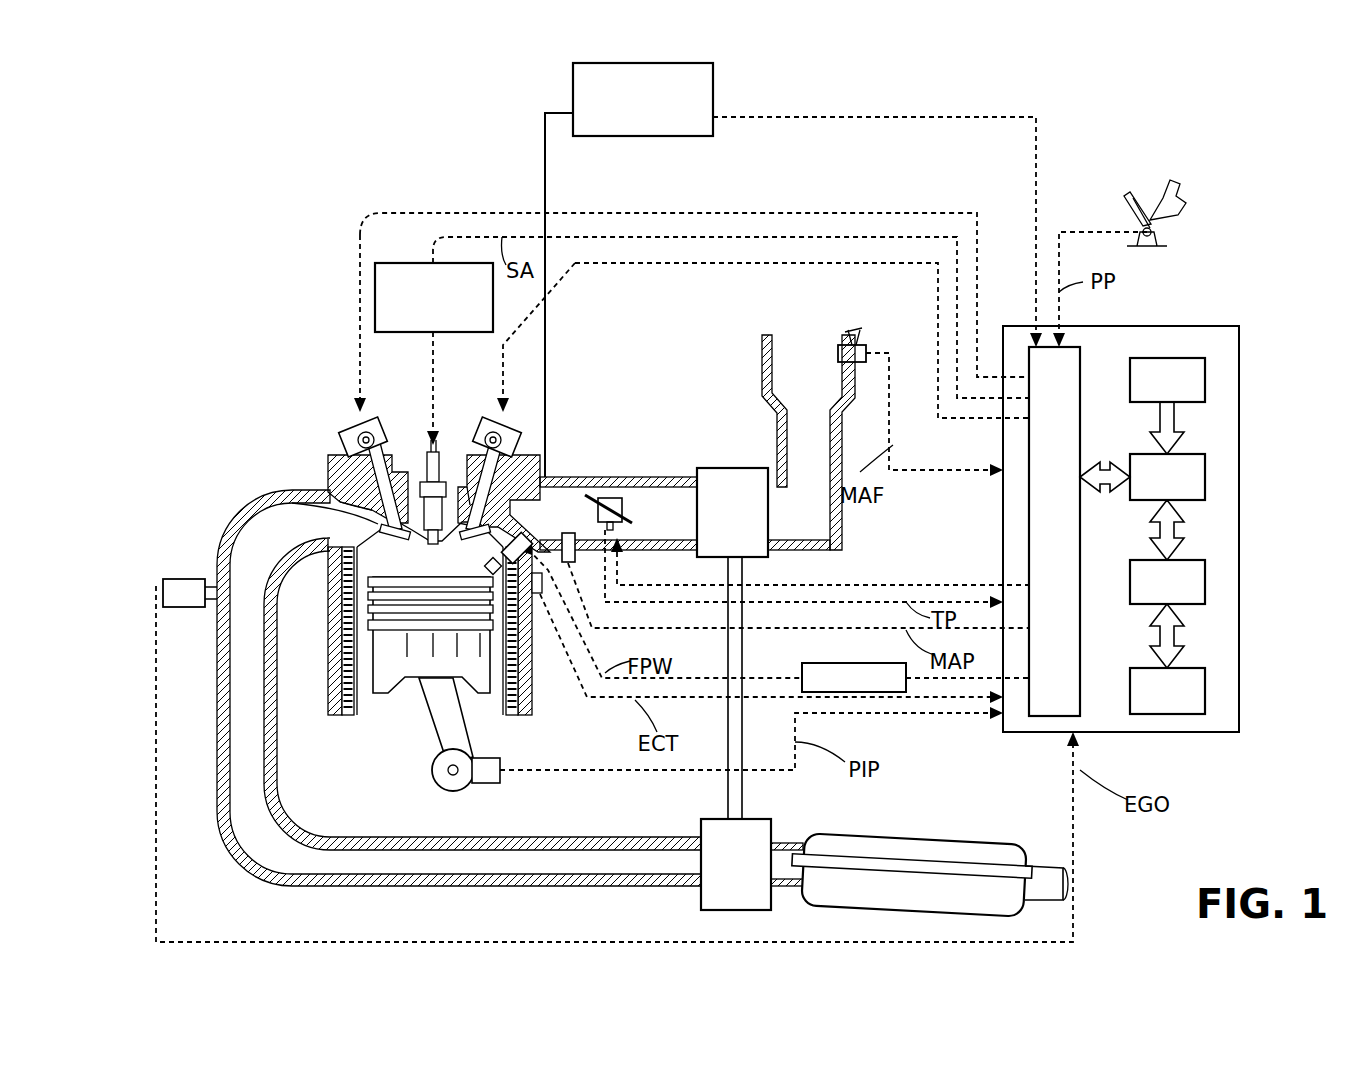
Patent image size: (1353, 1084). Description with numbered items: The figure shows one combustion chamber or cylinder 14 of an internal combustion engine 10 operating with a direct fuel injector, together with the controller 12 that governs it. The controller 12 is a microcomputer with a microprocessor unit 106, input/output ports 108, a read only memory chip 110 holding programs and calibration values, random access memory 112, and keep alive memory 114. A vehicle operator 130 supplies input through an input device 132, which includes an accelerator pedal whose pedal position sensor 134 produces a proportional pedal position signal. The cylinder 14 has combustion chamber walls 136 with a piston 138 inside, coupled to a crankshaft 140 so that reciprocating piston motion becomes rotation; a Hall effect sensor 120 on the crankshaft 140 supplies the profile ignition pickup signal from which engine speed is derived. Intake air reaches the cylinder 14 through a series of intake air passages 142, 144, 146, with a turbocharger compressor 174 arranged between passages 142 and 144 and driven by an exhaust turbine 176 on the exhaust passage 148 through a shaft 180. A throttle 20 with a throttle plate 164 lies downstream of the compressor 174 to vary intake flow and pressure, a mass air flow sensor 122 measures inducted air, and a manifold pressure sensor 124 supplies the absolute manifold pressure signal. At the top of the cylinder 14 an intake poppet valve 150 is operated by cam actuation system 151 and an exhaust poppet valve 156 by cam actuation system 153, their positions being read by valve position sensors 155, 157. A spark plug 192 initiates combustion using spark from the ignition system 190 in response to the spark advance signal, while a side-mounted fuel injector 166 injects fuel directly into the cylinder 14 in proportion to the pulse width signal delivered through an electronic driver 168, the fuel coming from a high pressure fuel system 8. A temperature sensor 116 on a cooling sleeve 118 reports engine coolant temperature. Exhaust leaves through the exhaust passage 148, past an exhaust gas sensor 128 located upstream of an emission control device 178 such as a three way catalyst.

The internal combustion engine 10 is at (147, 143).
The high pressure fuel system 8 is at (713, 80).
The ignition system 190 is at (392, 262).
The input device 132 is at (1126, 206).
The vehicle operator 130 is at (1183, 196).
The pedal position sensor 134 is at (1165, 235).
The controller 12 is at (1240, 328).
The input/output ports 108 is at (1085, 352).
The read only memory chip 110 is at (1206, 380).
The microprocessor unit 106 is at (1206, 474).
The random access memory 112 is at (1206, 582).
The keep alive memory 114 is at (1206, 692).
The mass air flow sensor 122 is at (856, 345).
The intake air passage 142 is at (790, 385).
The compressor 174 is at (733, 468).
The throttle plate 164 is at (585, 498).
The throttle 20 is at (613, 498).
The intake air passage 146 is at (548, 522).
The intake air passage 144 is at (654, 524).
The cam actuation system 153 is at (372, 430).
The valve position sensor 157 is at (355, 432).
The exhaust poppet valve 156 is at (365, 492).
The cam actuation system 151 is at (479, 430).
The valve position sensor 155 is at (522, 442).
The spark plug 192 is at (427, 497).
The intake poppet valve 150 is at (470, 505).
The fuel injector 166 is at (526, 548).
The exhaust passage 148 is at (280, 532).
The cylinder 14 is at (338, 580).
The exhaust gas sensor 128 is at (163, 583).
The manifold pressure sensor 124 is at (570, 565).
The combustion chamber walls 136 is at (352, 716).
The piston 138 is at (415, 665).
The temperature sensor 116 is at (517, 660).
The cooling sleeve 118 is at (538, 594).
The crankshaft 140 is at (443, 788).
The Hall effect sensor 120 is at (492, 784).
The electronic driver 168 is at (806, 663).
The shaft 180 is at (745, 786).
The emission control device 178 is at (985, 842).
The exhaust turbine 176 is at (701, 902).